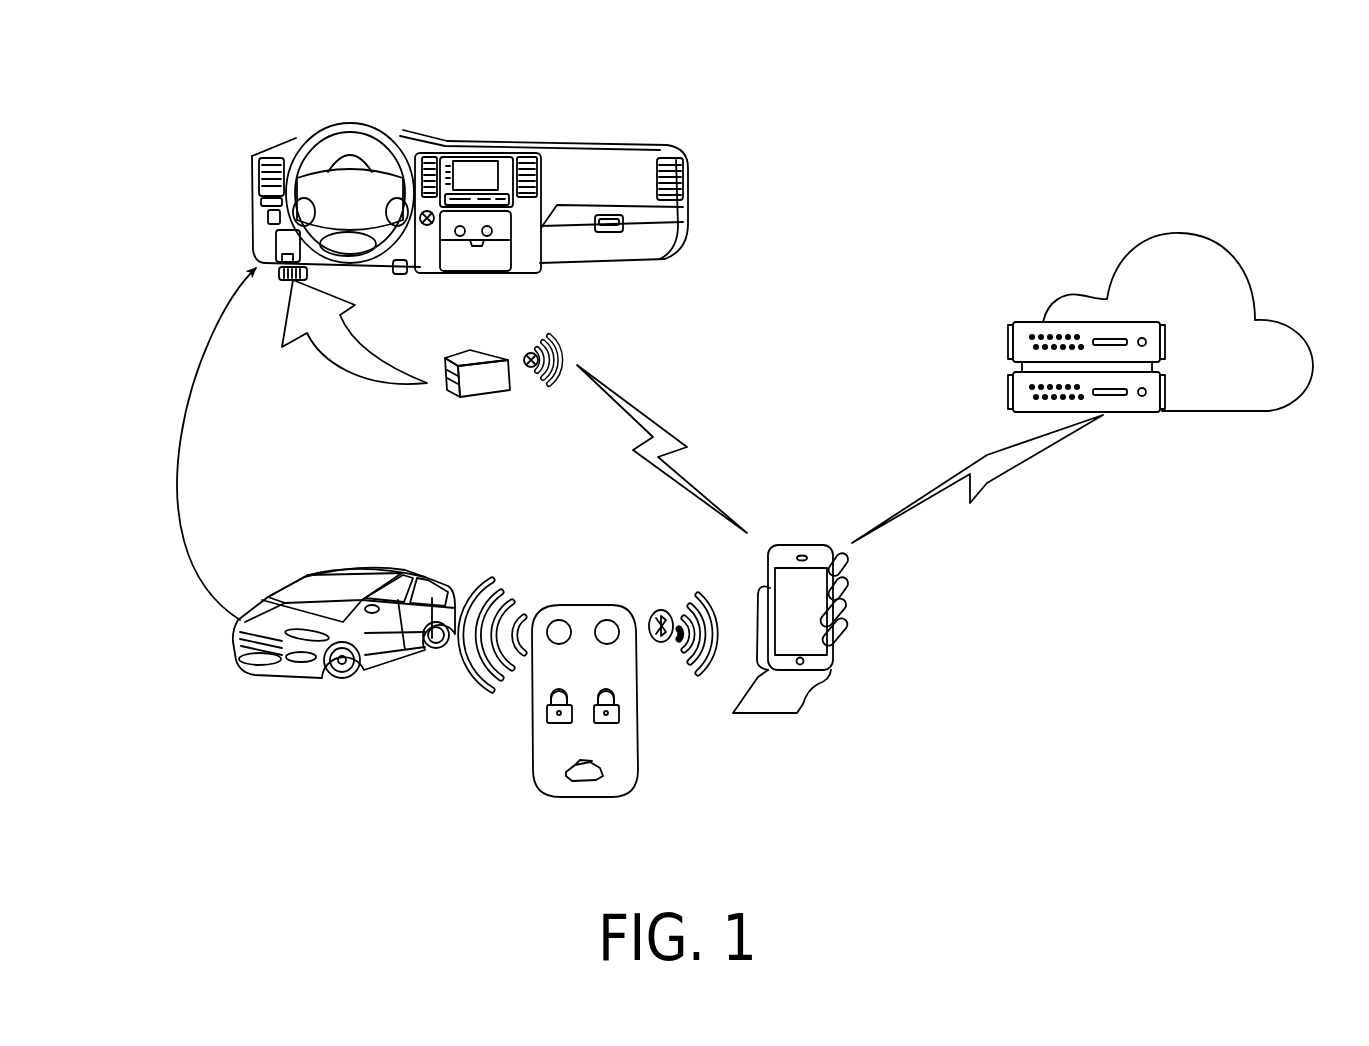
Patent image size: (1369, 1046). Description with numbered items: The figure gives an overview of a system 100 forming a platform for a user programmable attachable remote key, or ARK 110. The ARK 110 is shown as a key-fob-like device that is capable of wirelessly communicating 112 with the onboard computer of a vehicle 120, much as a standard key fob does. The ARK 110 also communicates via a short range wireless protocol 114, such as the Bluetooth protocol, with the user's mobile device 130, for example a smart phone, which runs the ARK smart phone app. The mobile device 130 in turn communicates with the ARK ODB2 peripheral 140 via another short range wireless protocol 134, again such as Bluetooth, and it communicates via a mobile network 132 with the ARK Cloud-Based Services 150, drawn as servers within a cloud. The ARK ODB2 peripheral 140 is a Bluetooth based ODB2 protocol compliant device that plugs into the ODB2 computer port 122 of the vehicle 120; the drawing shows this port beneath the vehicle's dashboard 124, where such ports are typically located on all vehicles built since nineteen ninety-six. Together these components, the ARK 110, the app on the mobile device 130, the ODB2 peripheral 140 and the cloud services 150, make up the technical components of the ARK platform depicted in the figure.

The system 100 is at (156, 104).
The attachable remote key (ARK) 110 is at (511, 806).
The wireless communication 112 is at (533, 580).
The short range wireless protocol 114 is at (690, 580).
The vehicle 120 is at (261, 690).
The ODB2 computer port 122 is at (276, 289).
The dashboard 124 is at (691, 235).
The user mobile device 130 is at (853, 606).
The mobile network 132 is at (1035, 518).
The short range wireless protocol 134 is at (637, 481).
The ARK ODB2 peripheral 140 is at (468, 421).
The ARK Cloud-Based Services 150 is at (995, 340).